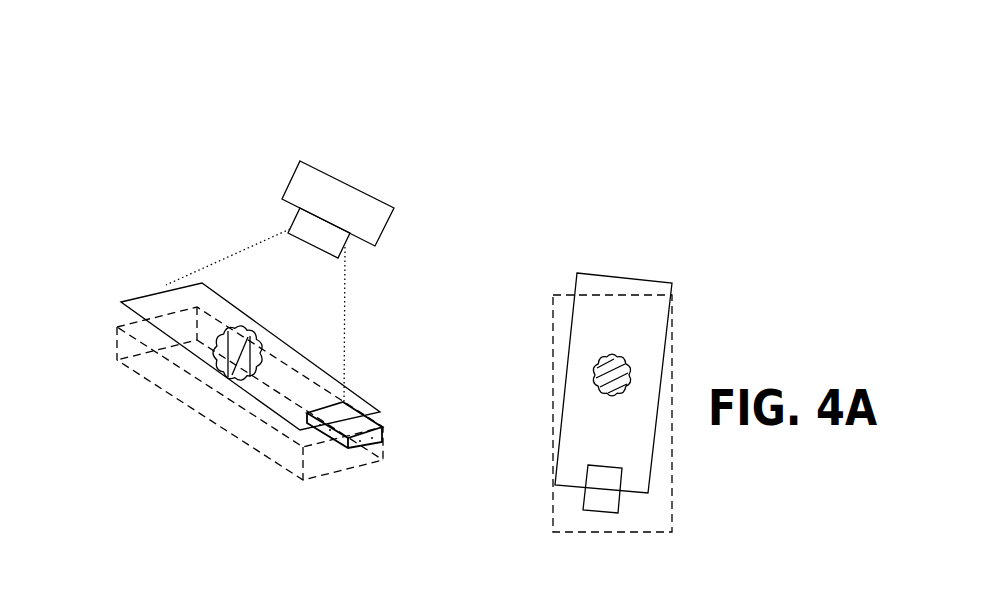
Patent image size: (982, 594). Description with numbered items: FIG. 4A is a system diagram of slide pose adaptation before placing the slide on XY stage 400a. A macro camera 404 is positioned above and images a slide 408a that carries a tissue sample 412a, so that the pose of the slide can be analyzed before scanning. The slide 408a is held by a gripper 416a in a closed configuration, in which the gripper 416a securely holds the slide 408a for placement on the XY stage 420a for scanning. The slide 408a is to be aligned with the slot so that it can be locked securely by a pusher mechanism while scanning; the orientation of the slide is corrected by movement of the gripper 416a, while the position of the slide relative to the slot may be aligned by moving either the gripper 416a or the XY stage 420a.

The system diagram of slide pose adaptation before placing the slide on XY stage 400a is at (157, 65).
The macro camera 404 is at (293, 178).
The slide 408a is at (566, 382).
The tissue sample 412a is at (606, 355).
The gripper 416a is at (587, 497).
The XY stage 420a is at (552, 517).